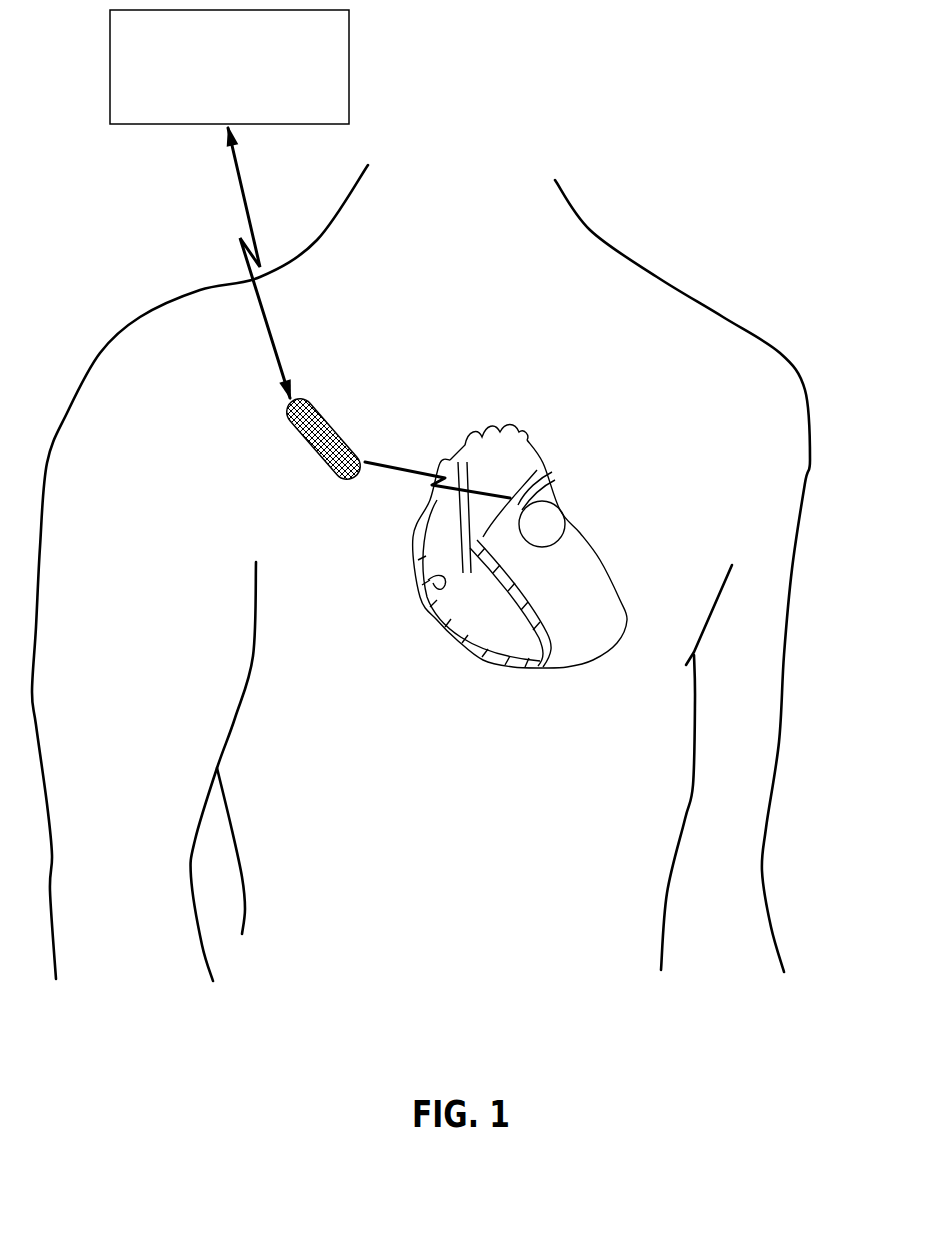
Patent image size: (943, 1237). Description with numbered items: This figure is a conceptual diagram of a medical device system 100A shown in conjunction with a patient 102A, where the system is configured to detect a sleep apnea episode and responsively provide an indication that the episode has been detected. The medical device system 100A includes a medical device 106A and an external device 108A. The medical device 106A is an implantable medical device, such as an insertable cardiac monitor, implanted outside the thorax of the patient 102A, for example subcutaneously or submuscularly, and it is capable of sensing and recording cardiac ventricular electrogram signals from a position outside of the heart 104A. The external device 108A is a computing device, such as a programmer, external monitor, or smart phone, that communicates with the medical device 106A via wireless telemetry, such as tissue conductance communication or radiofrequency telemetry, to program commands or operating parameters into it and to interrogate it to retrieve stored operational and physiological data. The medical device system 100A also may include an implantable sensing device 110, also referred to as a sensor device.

The medical device system 100A is at (480, 134).
The patient 102A is at (685, 290).
The heart 104A is at (588, 688).
The medical device 106A is at (306, 469).
The external device 108A is at (229, 205).
The implantable sensing device 110 is at (520, 505).